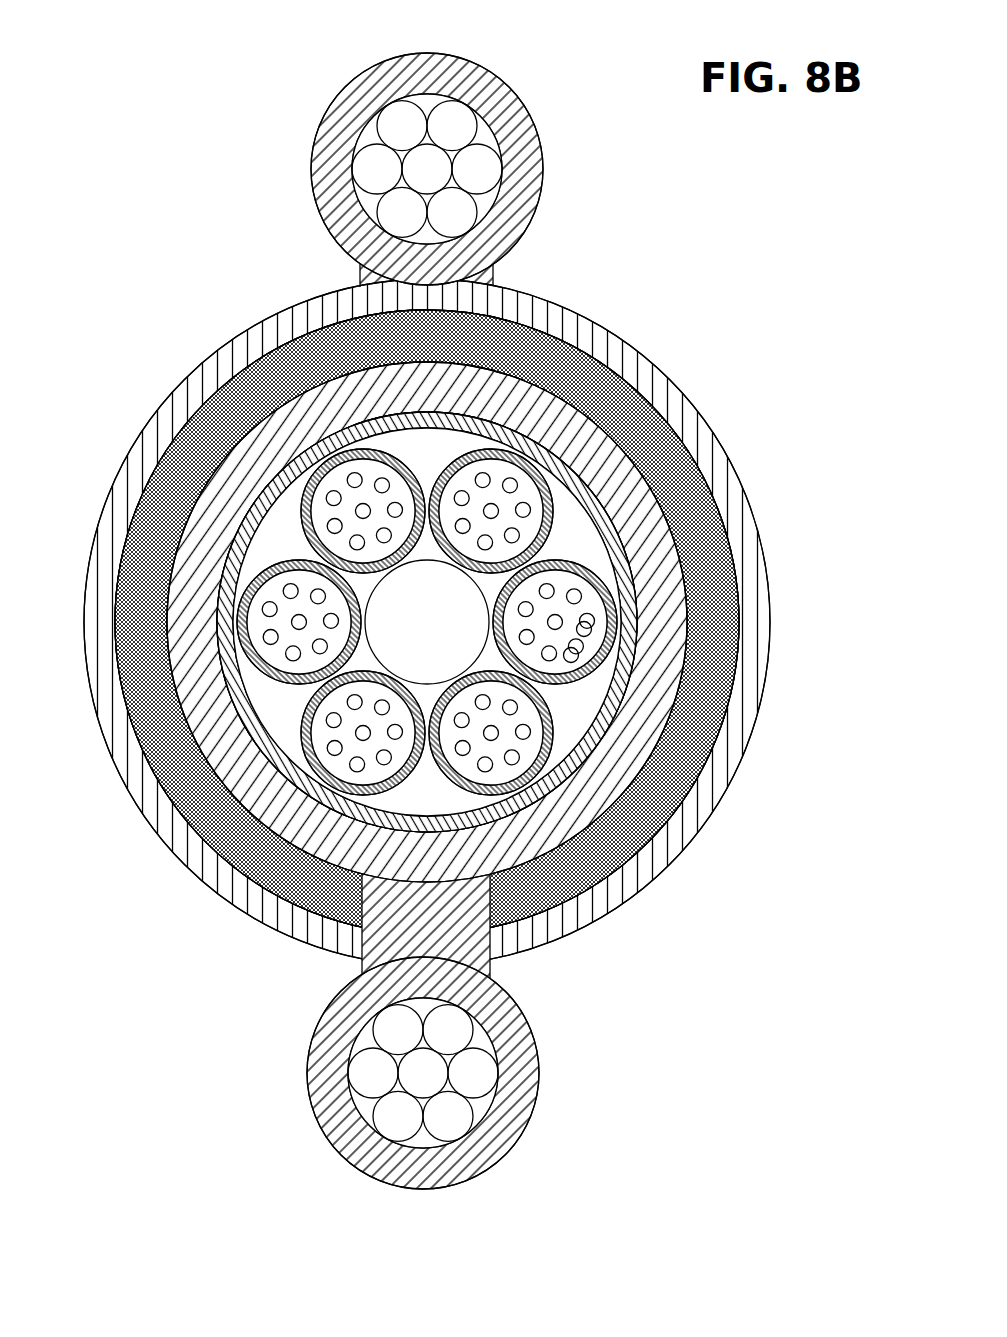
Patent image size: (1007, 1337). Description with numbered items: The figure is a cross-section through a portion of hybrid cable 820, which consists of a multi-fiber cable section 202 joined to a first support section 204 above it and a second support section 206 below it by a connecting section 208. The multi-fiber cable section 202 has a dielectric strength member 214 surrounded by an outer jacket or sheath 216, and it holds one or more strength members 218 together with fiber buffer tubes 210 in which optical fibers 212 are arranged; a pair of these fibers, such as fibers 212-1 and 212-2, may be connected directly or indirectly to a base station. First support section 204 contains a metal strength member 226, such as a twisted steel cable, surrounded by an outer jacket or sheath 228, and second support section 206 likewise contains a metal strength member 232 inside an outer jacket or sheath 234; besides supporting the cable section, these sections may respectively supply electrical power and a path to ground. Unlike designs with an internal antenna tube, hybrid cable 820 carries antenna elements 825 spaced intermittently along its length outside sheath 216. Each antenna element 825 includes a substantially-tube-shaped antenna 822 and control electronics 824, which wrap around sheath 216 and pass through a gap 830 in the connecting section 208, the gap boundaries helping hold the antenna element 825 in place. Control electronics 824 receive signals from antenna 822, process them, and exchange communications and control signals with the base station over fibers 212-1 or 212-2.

The hybrid cable 820 is at (132, 64).
The multi-fiber cable section 202 is at (473, 619).
The first support section 204 is at (445, 169).
The second support section 206 is at (443, 1073).
The connecting section 208 is at (488, 273).
The fiber buffer tube 210 is at (293, 508).
The optical fibers 212 is at (337, 470).
The optical fiber 212-1 is at (586, 630).
The optical fiber 212-2 is at (573, 655).
The dielectric strength member 214 is at (297, 775).
The sheath 216 is at (257, 492).
The strength member 218 is at (558, 752).
The metal strength member 226 is at (370, 188).
The outer jacket 228 is at (318, 143).
The metal strength member 232 is at (367, 1078).
The outer jacket 234 is at (305, 1047).
The substantially-tube-shaped antenna 822 is at (700, 442).
The control electronics 824 is at (697, 497).
The antenna element 825 is at (447, 622).
The gap 830 is at (490, 285).